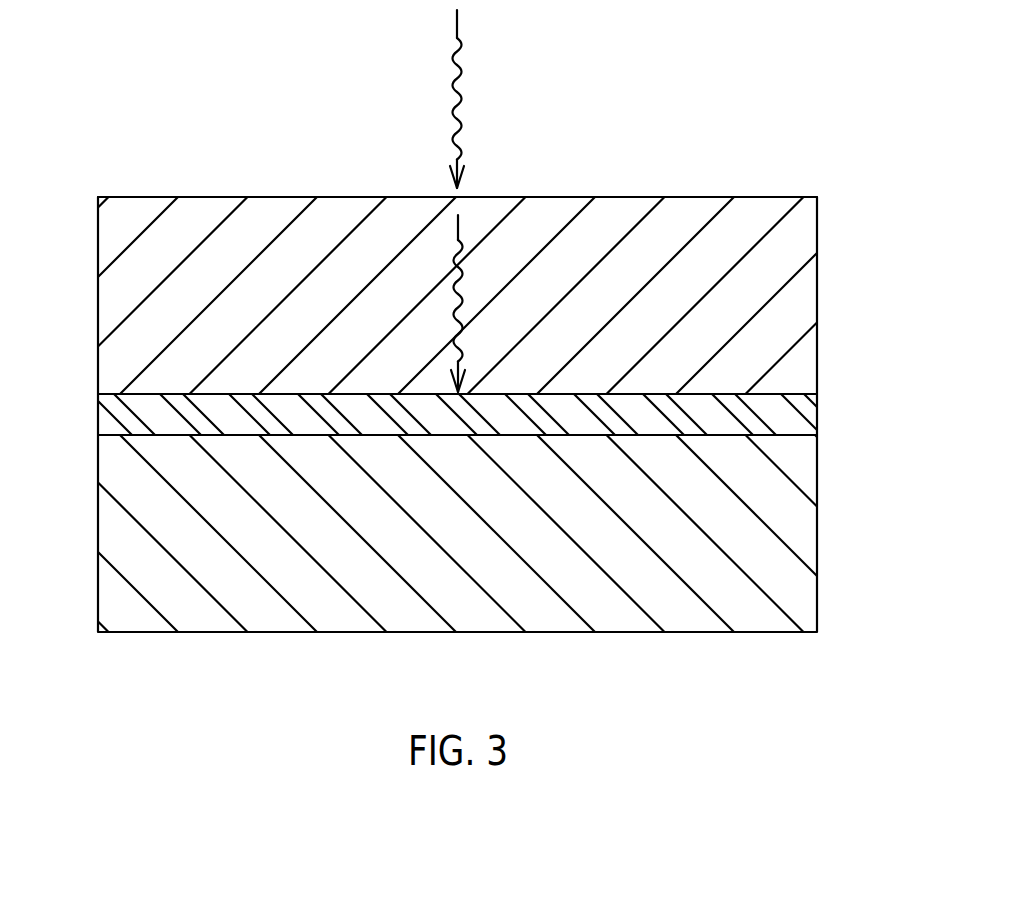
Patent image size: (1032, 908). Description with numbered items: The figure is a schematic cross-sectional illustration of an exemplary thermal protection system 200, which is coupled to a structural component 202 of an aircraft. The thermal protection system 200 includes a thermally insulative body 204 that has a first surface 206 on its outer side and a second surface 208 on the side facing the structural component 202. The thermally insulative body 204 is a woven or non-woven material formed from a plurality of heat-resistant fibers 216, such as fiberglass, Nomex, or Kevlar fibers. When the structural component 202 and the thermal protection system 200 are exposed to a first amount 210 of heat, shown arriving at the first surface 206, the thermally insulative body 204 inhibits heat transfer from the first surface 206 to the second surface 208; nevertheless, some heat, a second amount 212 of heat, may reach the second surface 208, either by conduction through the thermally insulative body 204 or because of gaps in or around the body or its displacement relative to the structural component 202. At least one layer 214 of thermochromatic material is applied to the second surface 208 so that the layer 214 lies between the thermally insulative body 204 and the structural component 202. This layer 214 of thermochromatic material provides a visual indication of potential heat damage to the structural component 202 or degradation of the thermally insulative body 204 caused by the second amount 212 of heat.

The thermal protection system 200 is at (92, 198).
The structural component 202 is at (817, 540).
The thermally insulative body 204 is at (817, 272).
The first surface 206 is at (758, 197).
The second surface 208 is at (797, 394).
The first amount of heat 210 is at (463, 62).
The second amount of heat 212 is at (463, 224).
The layer of thermochromatic material 214 is at (817, 413).
The heat-resistant fibers 216 is at (618, 208).